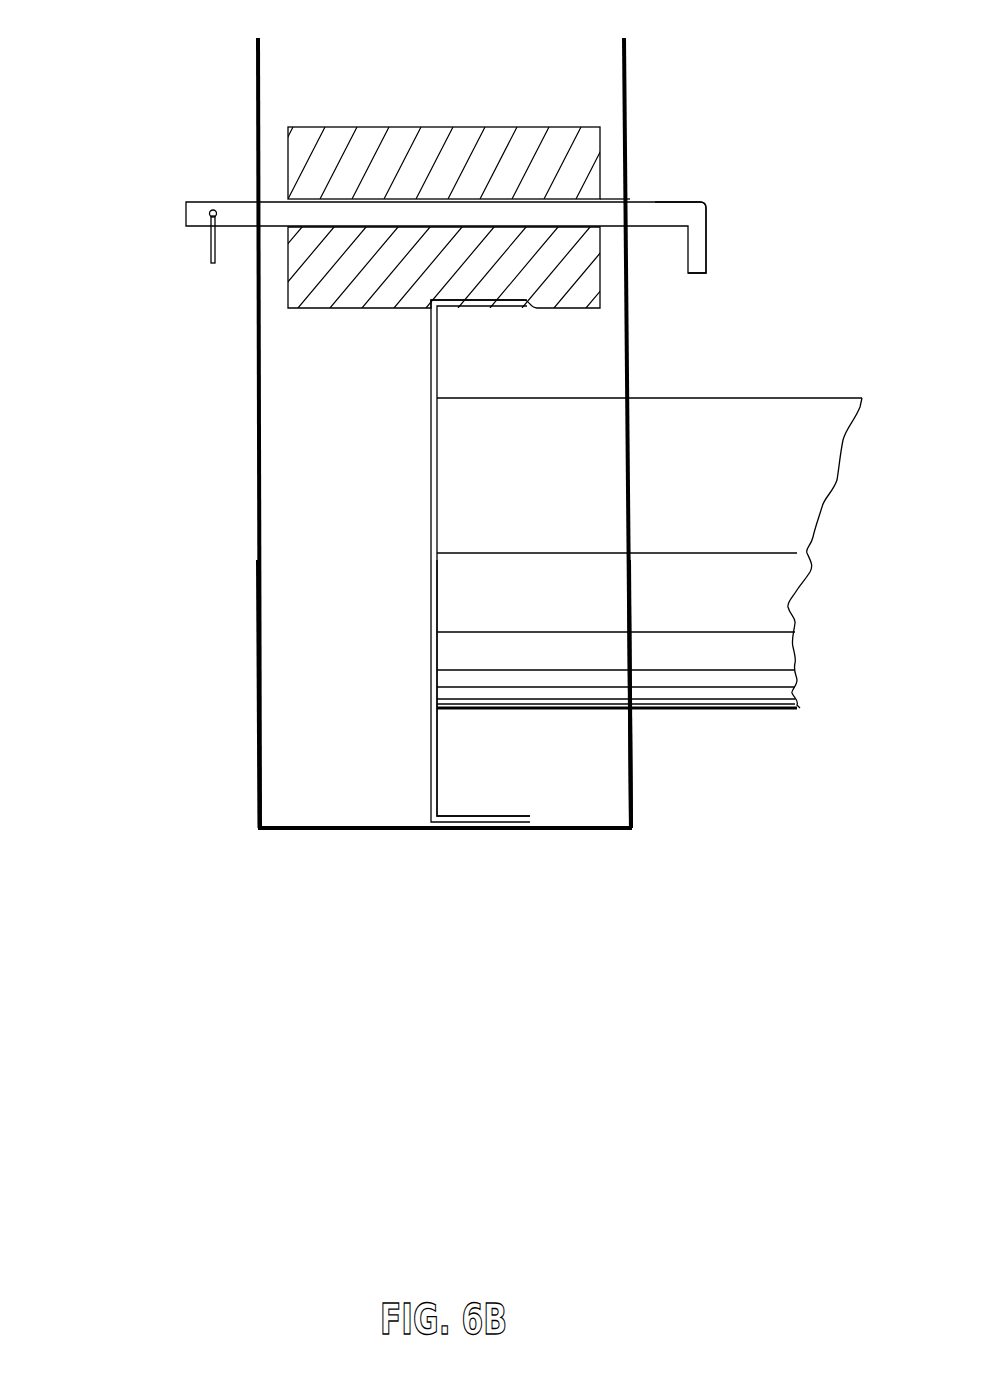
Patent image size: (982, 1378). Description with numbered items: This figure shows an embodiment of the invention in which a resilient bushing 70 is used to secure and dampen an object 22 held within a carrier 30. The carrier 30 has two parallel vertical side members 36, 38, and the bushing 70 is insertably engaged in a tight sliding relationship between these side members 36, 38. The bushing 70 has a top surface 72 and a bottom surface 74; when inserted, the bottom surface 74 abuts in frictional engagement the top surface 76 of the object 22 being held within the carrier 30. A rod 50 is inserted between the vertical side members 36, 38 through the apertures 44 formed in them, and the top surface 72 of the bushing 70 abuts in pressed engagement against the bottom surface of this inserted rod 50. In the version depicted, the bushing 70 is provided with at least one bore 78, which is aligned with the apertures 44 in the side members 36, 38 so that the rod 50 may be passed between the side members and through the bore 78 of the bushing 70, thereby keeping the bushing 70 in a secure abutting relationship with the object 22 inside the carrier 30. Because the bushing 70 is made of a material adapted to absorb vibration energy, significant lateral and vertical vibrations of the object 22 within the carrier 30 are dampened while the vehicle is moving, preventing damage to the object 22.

The object 22 is at (433, 767).
The carrier 30 is at (257, 570).
The parallel side member 36 is at (257, 693).
The parallel side member 38 is at (635, 728).
The apertures 44 is at (257, 202).
The rod 50 is at (658, 201).
The resilient bushing 70 is at (552, 273).
The top surface 72 is at (505, 127).
The bottom surface 74 is at (322, 308).
The top surface 76 is at (483, 308).
The bore 78 is at (603, 196).